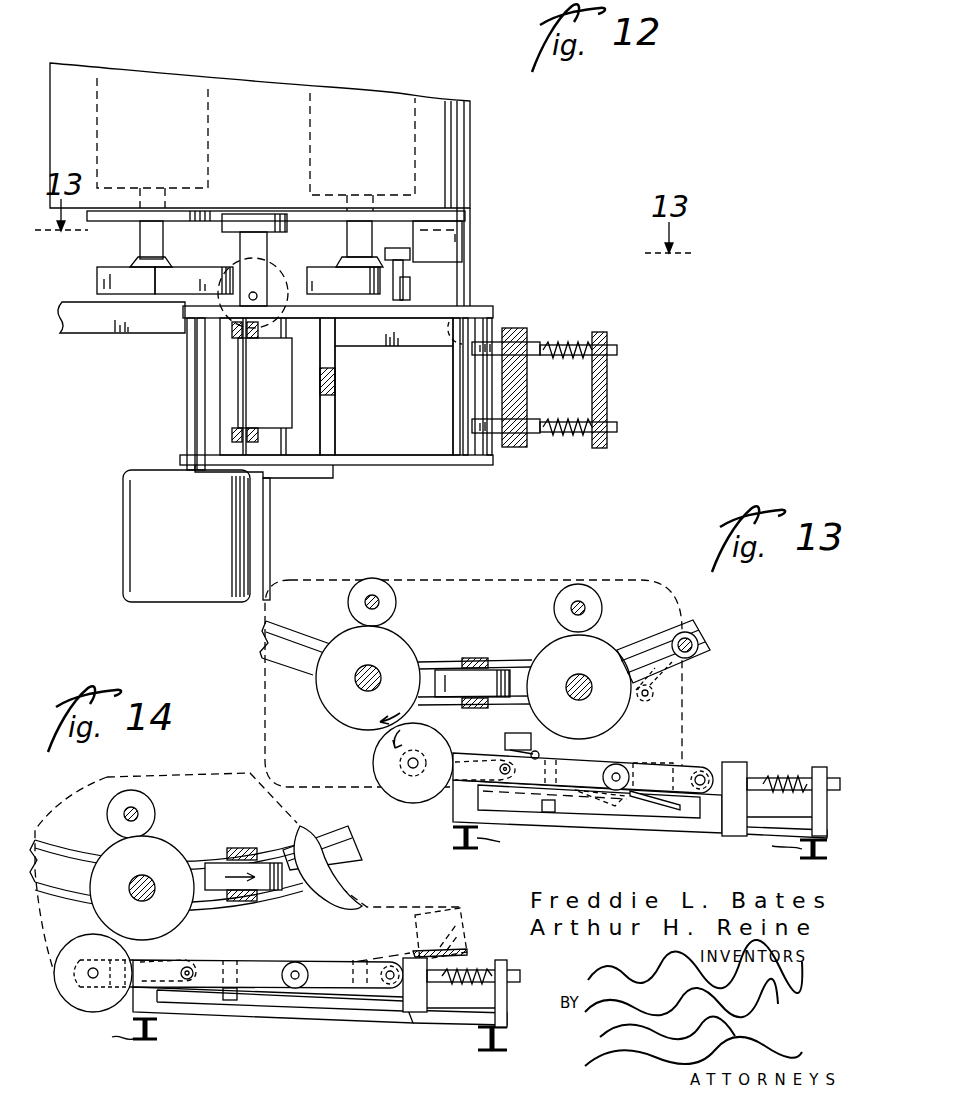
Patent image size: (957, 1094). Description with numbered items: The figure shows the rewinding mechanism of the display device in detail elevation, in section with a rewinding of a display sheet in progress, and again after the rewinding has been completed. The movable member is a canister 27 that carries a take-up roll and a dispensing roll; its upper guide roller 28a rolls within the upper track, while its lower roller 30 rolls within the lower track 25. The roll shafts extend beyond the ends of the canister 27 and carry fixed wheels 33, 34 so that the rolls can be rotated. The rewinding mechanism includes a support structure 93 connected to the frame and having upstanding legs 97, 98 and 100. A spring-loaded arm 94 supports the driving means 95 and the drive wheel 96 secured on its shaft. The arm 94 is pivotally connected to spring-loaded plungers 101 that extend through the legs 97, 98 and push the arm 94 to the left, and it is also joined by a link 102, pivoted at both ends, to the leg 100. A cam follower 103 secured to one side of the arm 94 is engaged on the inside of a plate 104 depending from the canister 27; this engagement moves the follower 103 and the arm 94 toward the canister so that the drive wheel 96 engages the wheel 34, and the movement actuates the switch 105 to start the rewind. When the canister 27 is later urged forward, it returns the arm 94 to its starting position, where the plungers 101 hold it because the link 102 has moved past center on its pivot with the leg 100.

In FIG. 12, the lower track 25 is at (82, 322).
In FIG. 12, the canister 27 is at (472, 112).
In FIG. 12, the upper guide roller 28a is at (472, 300).
In FIG. 13, the upper guide roller 28a is at (703, 650).
In FIG. 12, the lower roller 30 is at (282, 279).
In FIG. 12, the wheel 33 is at (408, 284).
In FIG. 12, the wheel 34 is at (97, 278).
In FIG. 13, the support structure 93 is at (607, 830).
In FIG. 12, the spring-loaded arm 94 is at (495, 306).
In FIG. 13, the spring-loaded arm 94 is at (692, 766).
In FIG. 14, the spring-loaded arm 94 is at (262, 962).
In FIG. 12, the driving means 95 is at (125, 495).
In FIG. 12, the drive wheel 96 is at (184, 282).
In FIG. 13, the drive wheel 96 is at (391, 797).
In FIG. 14, the drive wheel 96 is at (68, 1004).
In FIG. 12, the upstanding leg 97 is at (607, 442).
In FIG. 13, the upstanding leg 97 is at (822, 766).
In FIG. 14, the upstanding leg 97 is at (508, 1000).
In FIG. 12, the upstanding leg 98 is at (522, 447).
In FIG. 13, the upstanding leg 98 is at (737, 762).
In FIG. 14, the upstanding leg 98 is at (408, 994).
In FIG. 12, the upstanding leg 100 is at (232, 434).
In FIG. 13, the upstanding leg 100 is at (452, 807).
In FIG. 14, the upstanding leg 100 is at (301, 1018).
In FIG. 12, the spring-loaded plunger 101 is at (617, 428).
In FIG. 13, the spring-loaded plunger 101 is at (777, 778).
In FIG. 14, the spring-loaded plunger 101 is at (521, 976).
In FIG. 12, the link 102 is at (248, 381).
In FIG. 14, the link 102 is at (172, 980).
In FIG. 12, the cam follower 103 is at (411, 255).
In FIG. 13, the cam follower 103 is at (620, 765).
In FIG. 14, the cam follower 103 is at (298, 962).
In FIG. 12, the plate 104 is at (472, 232).
In FIG. 13, the plate 104 is at (671, 810).
In FIG. 13, the switch 105 is at (507, 741).